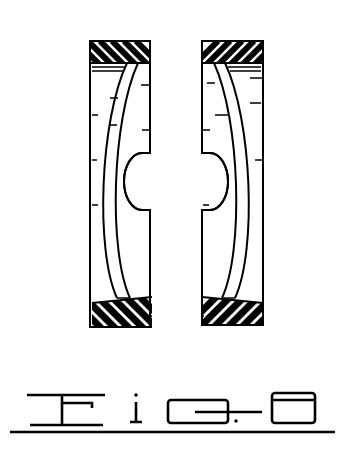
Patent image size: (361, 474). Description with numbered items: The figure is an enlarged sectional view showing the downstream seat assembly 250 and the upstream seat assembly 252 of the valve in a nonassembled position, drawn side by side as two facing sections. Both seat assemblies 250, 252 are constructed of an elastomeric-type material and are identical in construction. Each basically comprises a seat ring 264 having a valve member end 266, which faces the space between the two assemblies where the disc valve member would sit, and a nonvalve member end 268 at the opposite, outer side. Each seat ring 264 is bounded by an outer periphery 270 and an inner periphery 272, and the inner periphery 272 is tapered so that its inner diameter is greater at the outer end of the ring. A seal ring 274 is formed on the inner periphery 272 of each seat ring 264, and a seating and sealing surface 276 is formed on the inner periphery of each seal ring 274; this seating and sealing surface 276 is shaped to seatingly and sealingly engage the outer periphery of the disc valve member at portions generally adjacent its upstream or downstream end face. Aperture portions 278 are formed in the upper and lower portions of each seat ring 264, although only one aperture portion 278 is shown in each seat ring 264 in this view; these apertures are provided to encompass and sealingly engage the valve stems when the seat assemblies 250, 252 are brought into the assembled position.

The downstream seat assembly 250 is at (115, 40).
The upstream seat assembly 252 is at (233, 40).
The seat ring 264 is at (125, 328).
The valve member end 266 is at (203, 316).
The nonvalve member end 268 is at (90, 317).
The outer periphery 270 is at (211, 325).
The inner periphery 272 is at (107, 300).
The seal ring 274 is at (130, 283).
The seating and sealing surface 276 is at (126, 72).
The aperture portion 278 is at (143, 163).